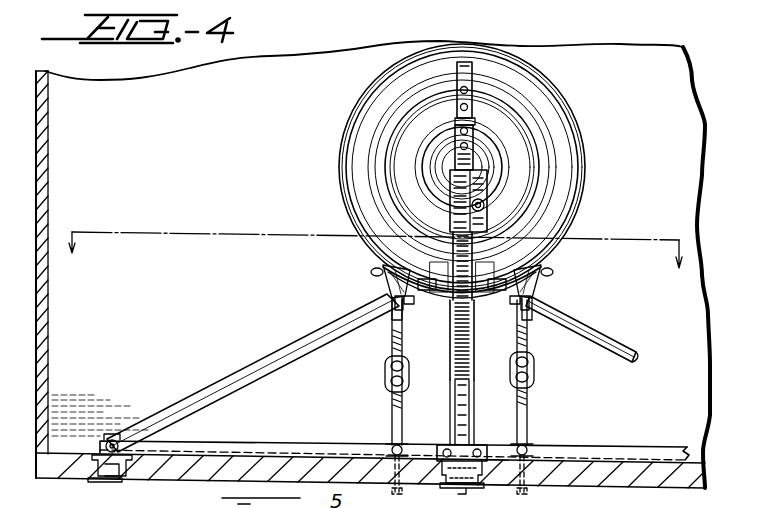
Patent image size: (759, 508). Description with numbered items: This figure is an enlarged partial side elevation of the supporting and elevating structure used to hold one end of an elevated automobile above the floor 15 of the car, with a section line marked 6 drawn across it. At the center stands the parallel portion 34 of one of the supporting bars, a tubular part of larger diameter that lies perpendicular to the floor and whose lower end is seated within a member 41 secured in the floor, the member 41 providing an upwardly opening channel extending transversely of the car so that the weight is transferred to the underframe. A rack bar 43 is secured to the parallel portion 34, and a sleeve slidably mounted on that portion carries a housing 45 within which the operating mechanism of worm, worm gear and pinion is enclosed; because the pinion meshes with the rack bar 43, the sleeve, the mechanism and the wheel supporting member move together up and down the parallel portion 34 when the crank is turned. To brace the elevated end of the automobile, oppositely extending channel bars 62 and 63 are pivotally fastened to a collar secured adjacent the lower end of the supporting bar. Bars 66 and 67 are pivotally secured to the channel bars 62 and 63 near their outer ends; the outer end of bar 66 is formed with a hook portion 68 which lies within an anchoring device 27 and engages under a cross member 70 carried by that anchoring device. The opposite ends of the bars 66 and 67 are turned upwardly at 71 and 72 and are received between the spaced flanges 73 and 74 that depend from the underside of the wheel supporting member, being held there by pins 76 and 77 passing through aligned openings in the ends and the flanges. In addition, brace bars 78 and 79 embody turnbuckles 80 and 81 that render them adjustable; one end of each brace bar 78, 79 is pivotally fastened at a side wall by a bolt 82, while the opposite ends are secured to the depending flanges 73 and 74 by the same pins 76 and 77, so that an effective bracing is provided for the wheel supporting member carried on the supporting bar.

The section line 6- 6 is at (376, 260).
The floor 15 is at (632, 478).
The anchoring device 27 is at (96, 476).
The parallel portion 34 is at (460, 398).
The member 41 is at (486, 482).
The rack bar 43 is at (470, 346).
The housing 45 is at (490, 196).
The channel bar 62 is at (246, 449).
The channel bar 63 is at (614, 455).
The bar 66 is at (234, 382).
The bar 67 is at (602, 338).
The hook portion 68 is at (105, 442).
The cross member 70 is at (124, 474).
The upturned end 71 is at (387, 300).
The upturned end 72 is at (540, 300).
The flange 73 is at (533, 290).
The flange 74 is at (512, 300).
The pin 76 is at (410, 297).
The pin 77 is at (545, 300).
The brace bar 78 is at (396, 400).
The brace bar 79 is at (526, 404).
The turnbuckle 80 is at (386, 374).
The turnbuckle 81 is at (534, 373).
The bolt 82 is at (538, 500).